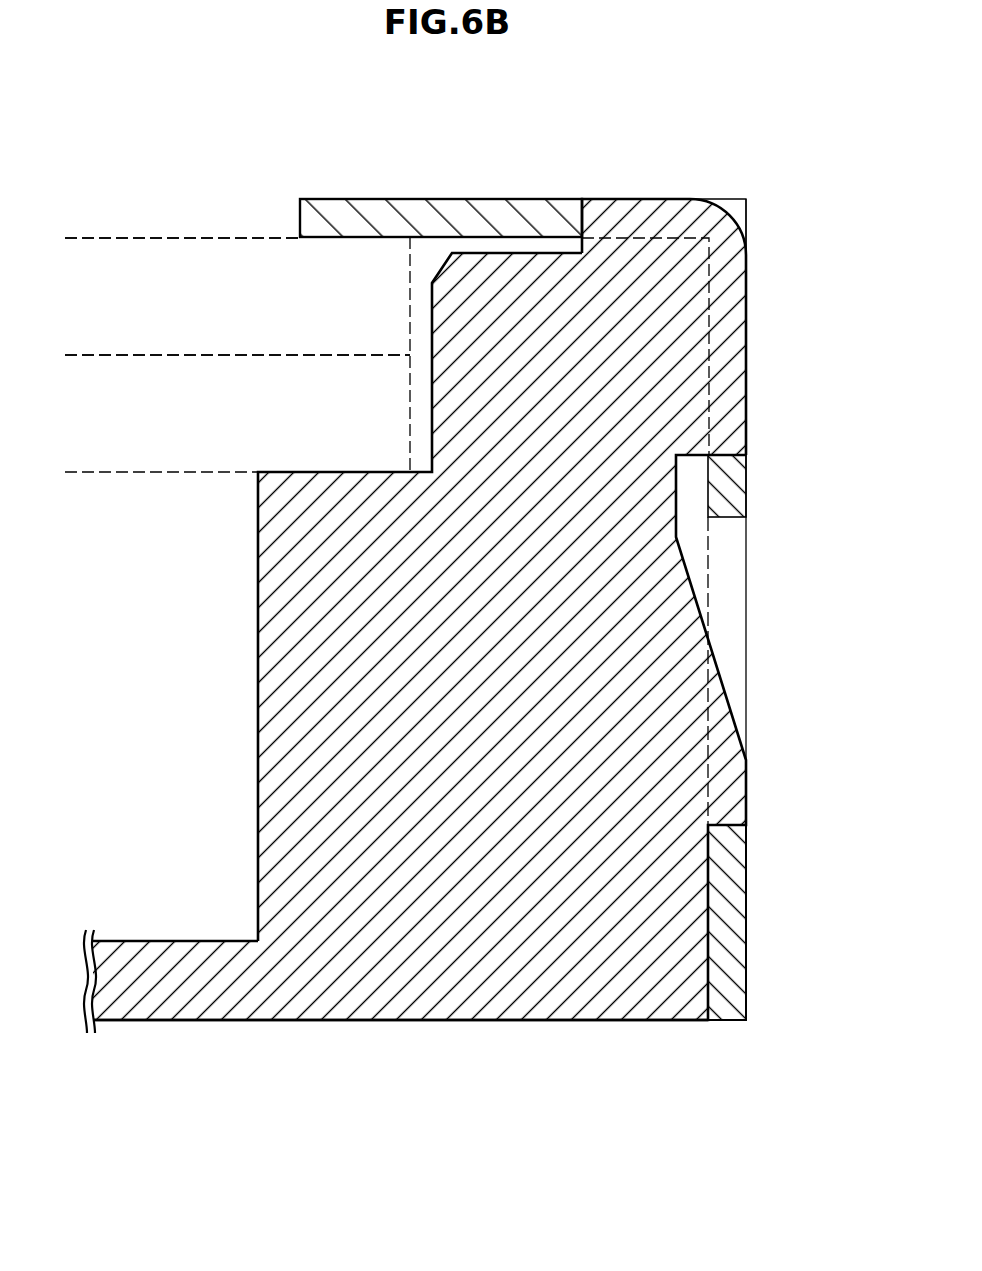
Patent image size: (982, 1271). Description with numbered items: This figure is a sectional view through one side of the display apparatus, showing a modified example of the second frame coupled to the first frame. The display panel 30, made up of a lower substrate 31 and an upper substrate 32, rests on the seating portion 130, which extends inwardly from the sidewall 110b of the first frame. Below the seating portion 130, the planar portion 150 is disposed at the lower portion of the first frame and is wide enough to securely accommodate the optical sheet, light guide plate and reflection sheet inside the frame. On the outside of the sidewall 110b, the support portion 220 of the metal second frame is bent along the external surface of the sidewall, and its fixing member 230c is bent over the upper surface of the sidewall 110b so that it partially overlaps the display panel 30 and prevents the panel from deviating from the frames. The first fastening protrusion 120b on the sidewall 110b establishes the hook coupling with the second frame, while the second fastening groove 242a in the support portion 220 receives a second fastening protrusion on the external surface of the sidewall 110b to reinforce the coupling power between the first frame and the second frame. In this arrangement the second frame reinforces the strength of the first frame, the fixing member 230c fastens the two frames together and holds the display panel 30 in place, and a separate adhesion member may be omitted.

The display panel 30 is at (160, 119).
The lower substrate 31 is at (78, 417).
The upper substrate 32 is at (160, 275).
The sidewall 110b is at (550, 848).
The first fastening protrusion 120b is at (682, 290).
The seating portion 130 is at (340, 490).
The planar portion 150 is at (162, 965).
The support portion 220 is at (720, 900).
The fixing member 230c is at (513, 220).
The second fastening groove 242a is at (727, 610).